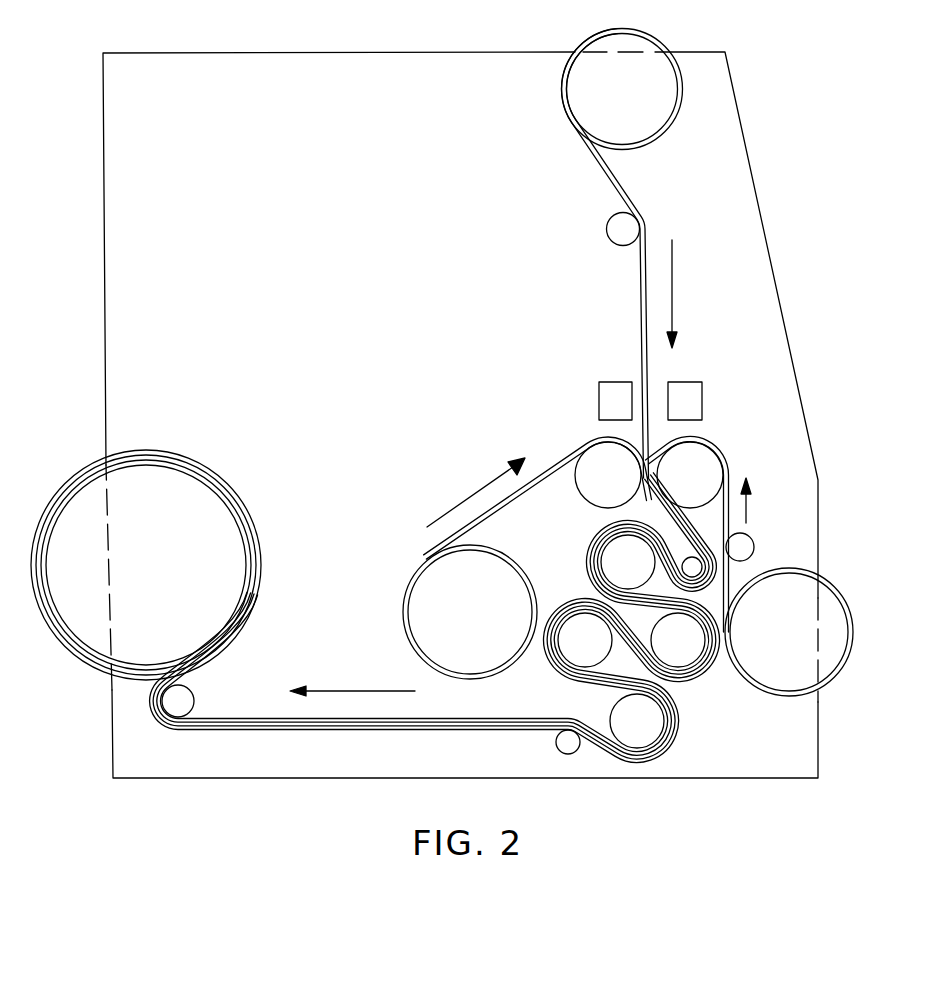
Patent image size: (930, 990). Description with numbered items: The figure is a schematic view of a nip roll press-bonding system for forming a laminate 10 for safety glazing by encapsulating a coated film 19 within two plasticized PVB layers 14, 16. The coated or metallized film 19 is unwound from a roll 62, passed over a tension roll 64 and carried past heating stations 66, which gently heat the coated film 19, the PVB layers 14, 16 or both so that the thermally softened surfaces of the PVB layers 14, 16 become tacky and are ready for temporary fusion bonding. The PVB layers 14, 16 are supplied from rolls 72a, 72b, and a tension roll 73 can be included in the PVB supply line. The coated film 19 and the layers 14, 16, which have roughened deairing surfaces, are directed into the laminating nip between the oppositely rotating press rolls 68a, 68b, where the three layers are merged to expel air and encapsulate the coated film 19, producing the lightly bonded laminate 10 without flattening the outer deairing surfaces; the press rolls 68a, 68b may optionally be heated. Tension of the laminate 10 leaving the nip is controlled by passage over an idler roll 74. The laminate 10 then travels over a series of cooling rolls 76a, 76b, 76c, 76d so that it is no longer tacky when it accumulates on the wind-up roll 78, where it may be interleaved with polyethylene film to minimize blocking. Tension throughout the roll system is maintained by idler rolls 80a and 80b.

The laminate 10 is at (702, 527).
The PVB layer 14 is at (551, 470).
The PVB layer 16 is at (730, 480).
The coated film 19 is at (645, 240).
The roll 62 is at (638, 32).
The tension roll 64 is at (613, 242).
The stations 66 is at (598, 390).
The press roll 68a is at (600, 458).
The press roll 68b is at (693, 457).
The roll 72a is at (427, 617).
The roll 72b is at (750, 665).
The tension roll 73 is at (753, 540).
The idler roll 74 is at (612, 521).
The cooling roll 76a is at (607, 557).
The cooling roll 76b is at (663, 625).
The cooling roll 76c is at (593, 650).
The cooling roll 76d is at (617, 716).
The roll 78 is at (232, 579).
The idler roll 80a is at (556, 750).
The idler roll 80b is at (186, 700).